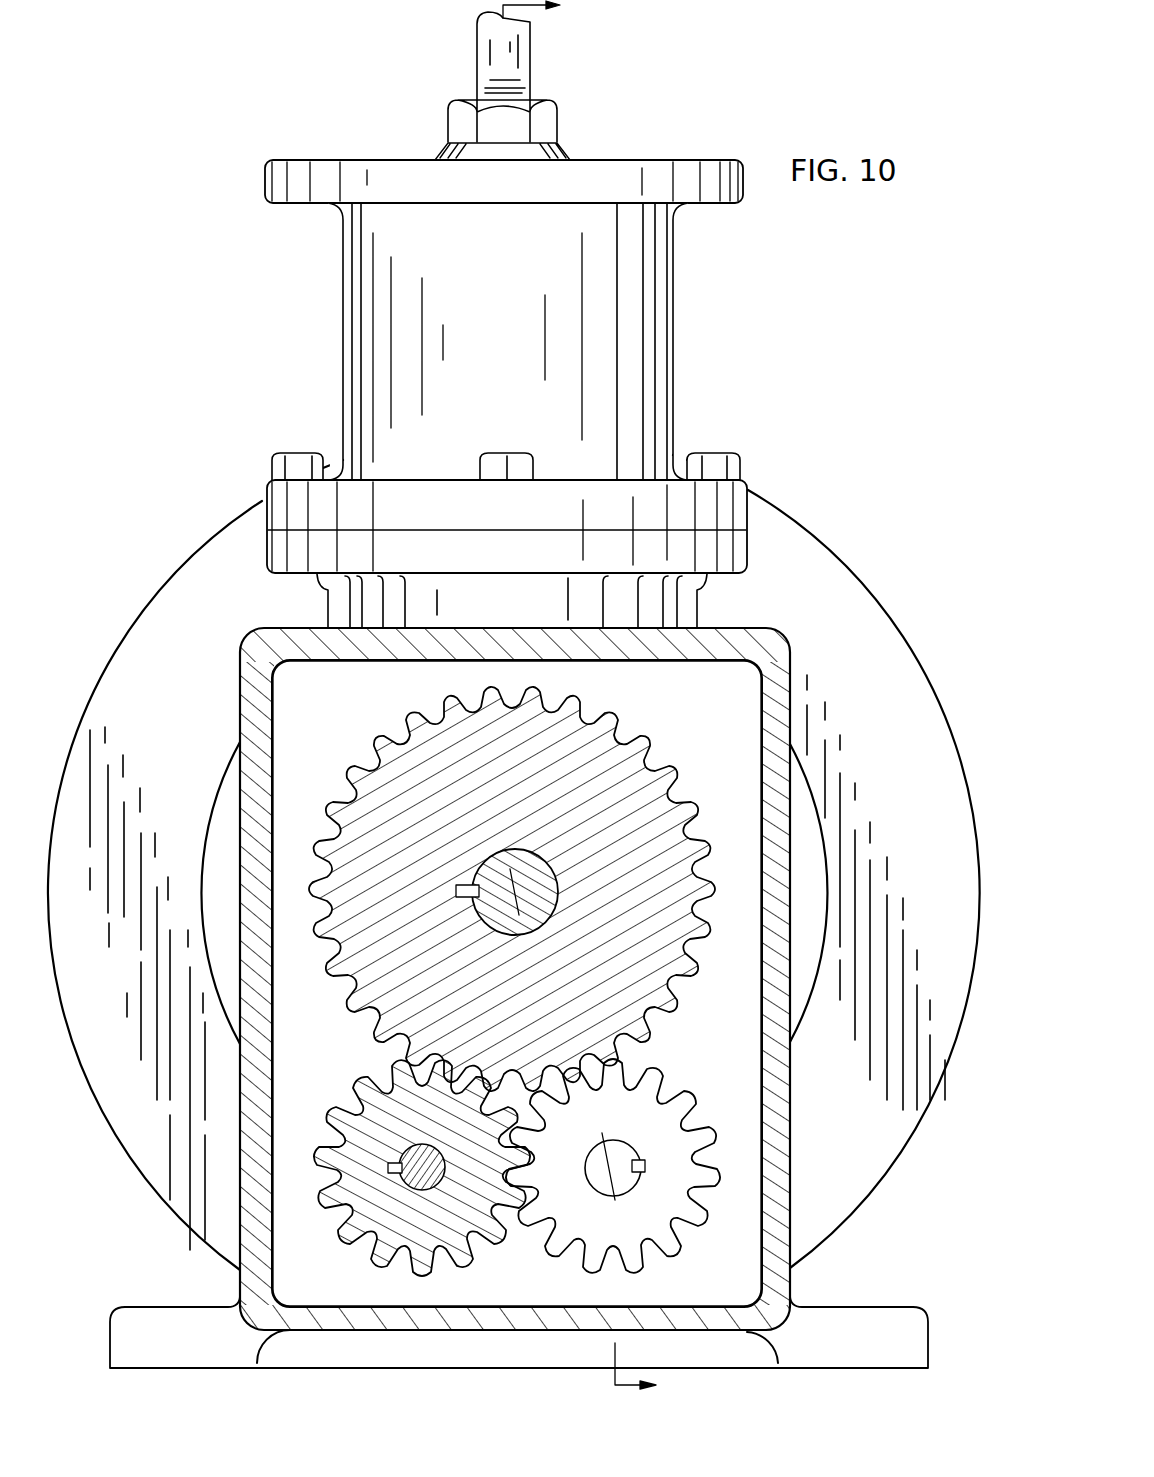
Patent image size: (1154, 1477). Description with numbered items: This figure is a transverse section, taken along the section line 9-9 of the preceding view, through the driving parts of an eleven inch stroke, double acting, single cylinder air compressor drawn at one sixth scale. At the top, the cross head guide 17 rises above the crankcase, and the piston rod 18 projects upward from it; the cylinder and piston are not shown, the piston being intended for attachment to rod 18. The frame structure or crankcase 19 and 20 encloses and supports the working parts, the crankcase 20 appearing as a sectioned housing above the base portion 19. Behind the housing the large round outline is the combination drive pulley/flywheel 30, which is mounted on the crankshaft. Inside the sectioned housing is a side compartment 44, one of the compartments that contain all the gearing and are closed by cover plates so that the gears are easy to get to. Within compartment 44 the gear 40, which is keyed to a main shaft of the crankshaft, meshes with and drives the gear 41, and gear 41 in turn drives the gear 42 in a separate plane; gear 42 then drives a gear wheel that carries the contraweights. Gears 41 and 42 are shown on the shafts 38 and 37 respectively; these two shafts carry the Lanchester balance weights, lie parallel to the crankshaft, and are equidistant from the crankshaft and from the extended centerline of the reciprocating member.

The section line 9- 9 is at (590, 700).
The cross head guide 17 is at (660, 299).
The piston rod 18 is at (518, 52).
The frame structure or crankcase 19 is at (162, 1325).
The frame structure or crankcase 20 is at (775, 988).
The combination drive pulley/flywheel 30 is at (837, 588).
The shaft 37 is at (625, 1175).
The shaft 38 is at (413, 1187).
The gear 40 is at (630, 777).
The gear 41 is at (377, 1127).
The gear 42 is at (668, 1117).
The side compartment 44 is at (517, 983).